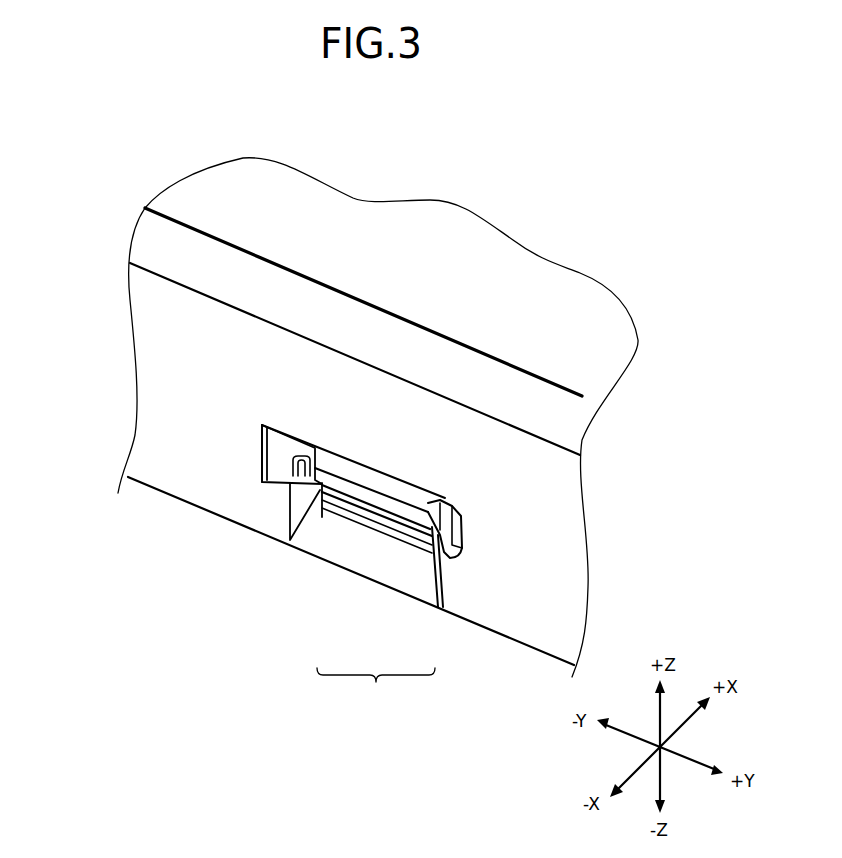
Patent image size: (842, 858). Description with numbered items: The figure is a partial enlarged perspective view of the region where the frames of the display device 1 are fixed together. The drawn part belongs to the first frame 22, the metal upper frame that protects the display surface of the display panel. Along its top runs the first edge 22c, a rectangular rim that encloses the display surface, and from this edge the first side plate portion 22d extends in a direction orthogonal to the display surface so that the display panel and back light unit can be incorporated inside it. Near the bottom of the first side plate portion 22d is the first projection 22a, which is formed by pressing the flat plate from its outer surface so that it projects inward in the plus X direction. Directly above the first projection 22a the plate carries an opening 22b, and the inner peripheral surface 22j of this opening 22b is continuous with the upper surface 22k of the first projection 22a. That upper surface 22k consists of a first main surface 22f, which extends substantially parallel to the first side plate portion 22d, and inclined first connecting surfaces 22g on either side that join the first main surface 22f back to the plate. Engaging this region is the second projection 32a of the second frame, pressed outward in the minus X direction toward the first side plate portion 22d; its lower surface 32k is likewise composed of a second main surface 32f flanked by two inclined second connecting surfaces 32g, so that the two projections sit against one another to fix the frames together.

The display device 1 is at (547, 210).
The first frame 22 is at (233, 270).
The first projection 22a is at (388, 528).
The opening 22b is at (291, 450).
The first edge 22c is at (185, 250).
The first side plate portion 22d is at (148, 357).
The first main surface 22f is at (396, 515).
The first connecting surface 22g is at (443, 540).
The inner peripheral surface 22j is at (270, 458).
The upper surface 22k is at (487, 440).
The second projection 32a is at (380, 477).
The second main surface 32f is at (368, 512).
The second connecting surface 32g is at (437, 530).
The lower surface 32k is at (376, 690).